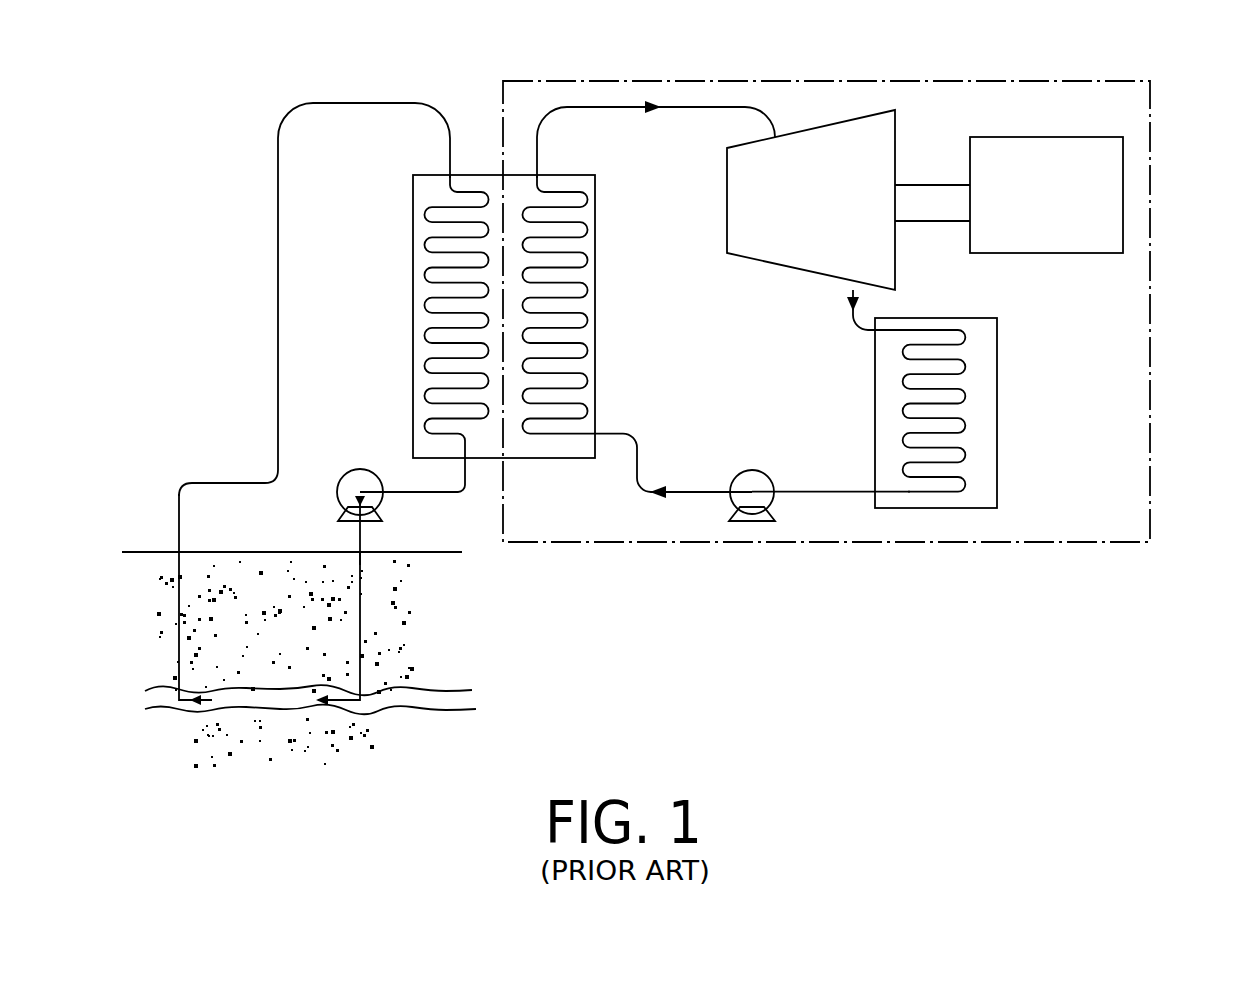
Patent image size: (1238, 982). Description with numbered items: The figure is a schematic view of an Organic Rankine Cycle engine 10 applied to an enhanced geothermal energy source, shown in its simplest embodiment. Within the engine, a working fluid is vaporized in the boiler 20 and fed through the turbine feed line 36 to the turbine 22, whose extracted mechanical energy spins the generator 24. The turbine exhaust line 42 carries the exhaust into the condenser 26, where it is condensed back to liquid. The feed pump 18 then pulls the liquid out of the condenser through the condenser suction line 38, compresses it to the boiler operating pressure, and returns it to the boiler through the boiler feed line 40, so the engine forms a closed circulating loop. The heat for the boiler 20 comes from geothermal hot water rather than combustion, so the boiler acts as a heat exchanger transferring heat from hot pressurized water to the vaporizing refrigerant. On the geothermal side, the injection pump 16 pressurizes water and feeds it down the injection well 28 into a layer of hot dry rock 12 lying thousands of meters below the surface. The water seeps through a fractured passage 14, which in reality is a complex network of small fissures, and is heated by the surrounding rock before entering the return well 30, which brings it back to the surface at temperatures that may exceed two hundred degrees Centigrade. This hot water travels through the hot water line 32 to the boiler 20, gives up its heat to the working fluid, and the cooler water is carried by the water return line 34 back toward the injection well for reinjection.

The Organic Rankine Cycle engine 10 is at (840, 543).
The layer of hot dry rock 12 is at (385, 648).
The fractured passage 14 is at (375, 701).
The injection pump 16 is at (377, 508).
The feed pump 18 is at (757, 510).
The boiler 20 is at (590, 312).
The turbine 22 is at (830, 157).
The generator 24 is at (1063, 190).
The condenser 26 is at (978, 387).
The injection well 28 is at (362, 592).
The return well 30 is at (178, 575).
The hot water line 32 is at (278, 236).
The water return line 34 is at (408, 493).
The turbine feed line 36 is at (623, 107).
The condenser suction line 38 is at (843, 494).
The boiler feed line 40 is at (675, 494).
The turbine exhaust line 42 is at (857, 323).